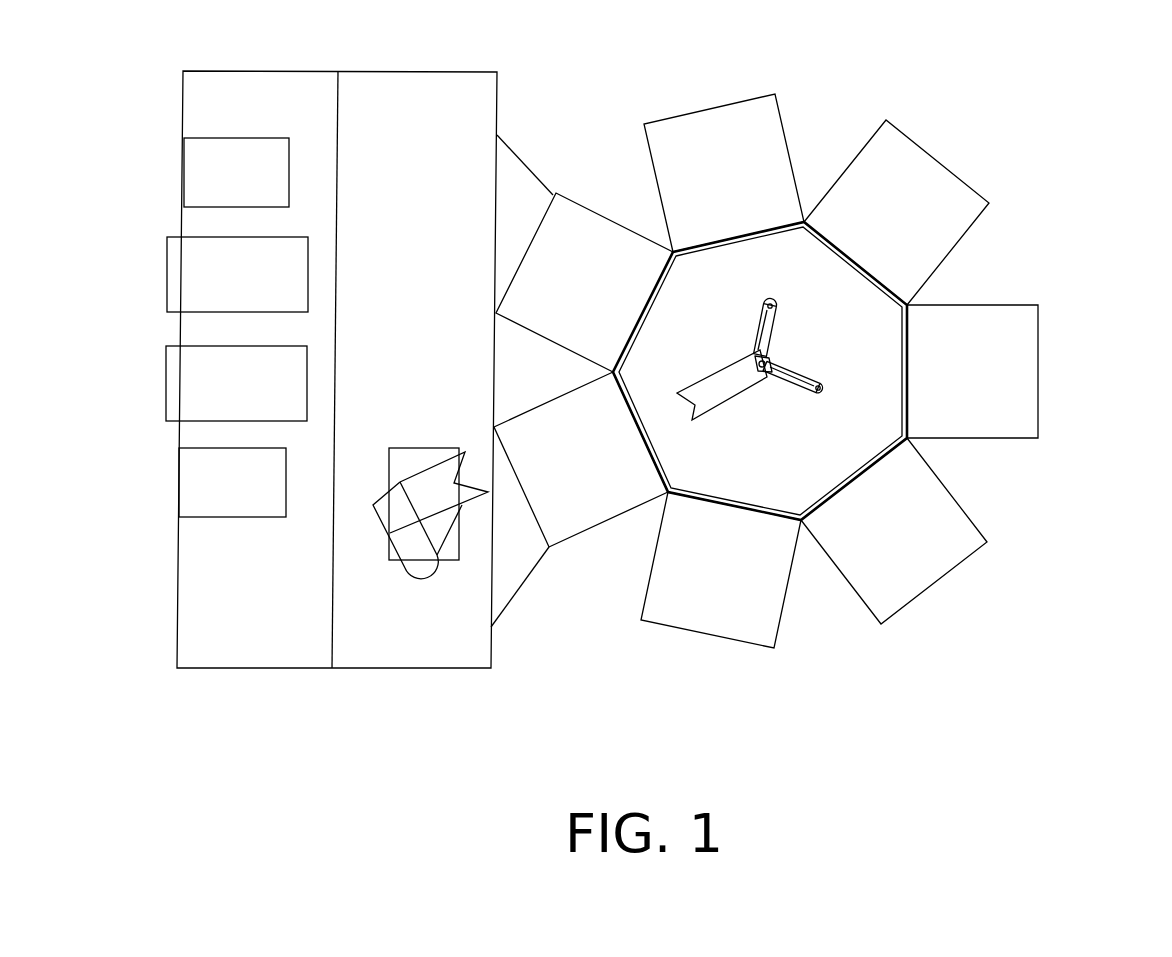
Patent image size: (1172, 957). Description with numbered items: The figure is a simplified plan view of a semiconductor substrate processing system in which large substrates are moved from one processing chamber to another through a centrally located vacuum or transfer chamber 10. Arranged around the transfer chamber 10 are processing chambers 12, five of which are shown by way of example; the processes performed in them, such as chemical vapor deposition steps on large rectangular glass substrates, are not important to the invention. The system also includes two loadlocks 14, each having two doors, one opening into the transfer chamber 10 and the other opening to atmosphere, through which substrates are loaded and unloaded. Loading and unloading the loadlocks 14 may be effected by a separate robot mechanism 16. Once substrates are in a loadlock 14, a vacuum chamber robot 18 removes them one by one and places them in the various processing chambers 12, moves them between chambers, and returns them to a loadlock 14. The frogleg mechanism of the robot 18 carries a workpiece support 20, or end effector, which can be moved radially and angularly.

The transfer chamber 10 is at (760, 371).
The processing chamber 12 is at (920, 168).
The loadlock 14 is at (573, 237).
The robot mechanism 16 is at (430, 456).
The vacuum chamber robot 18 is at (952, 406).
The workpiece support 20 is at (712, 383).